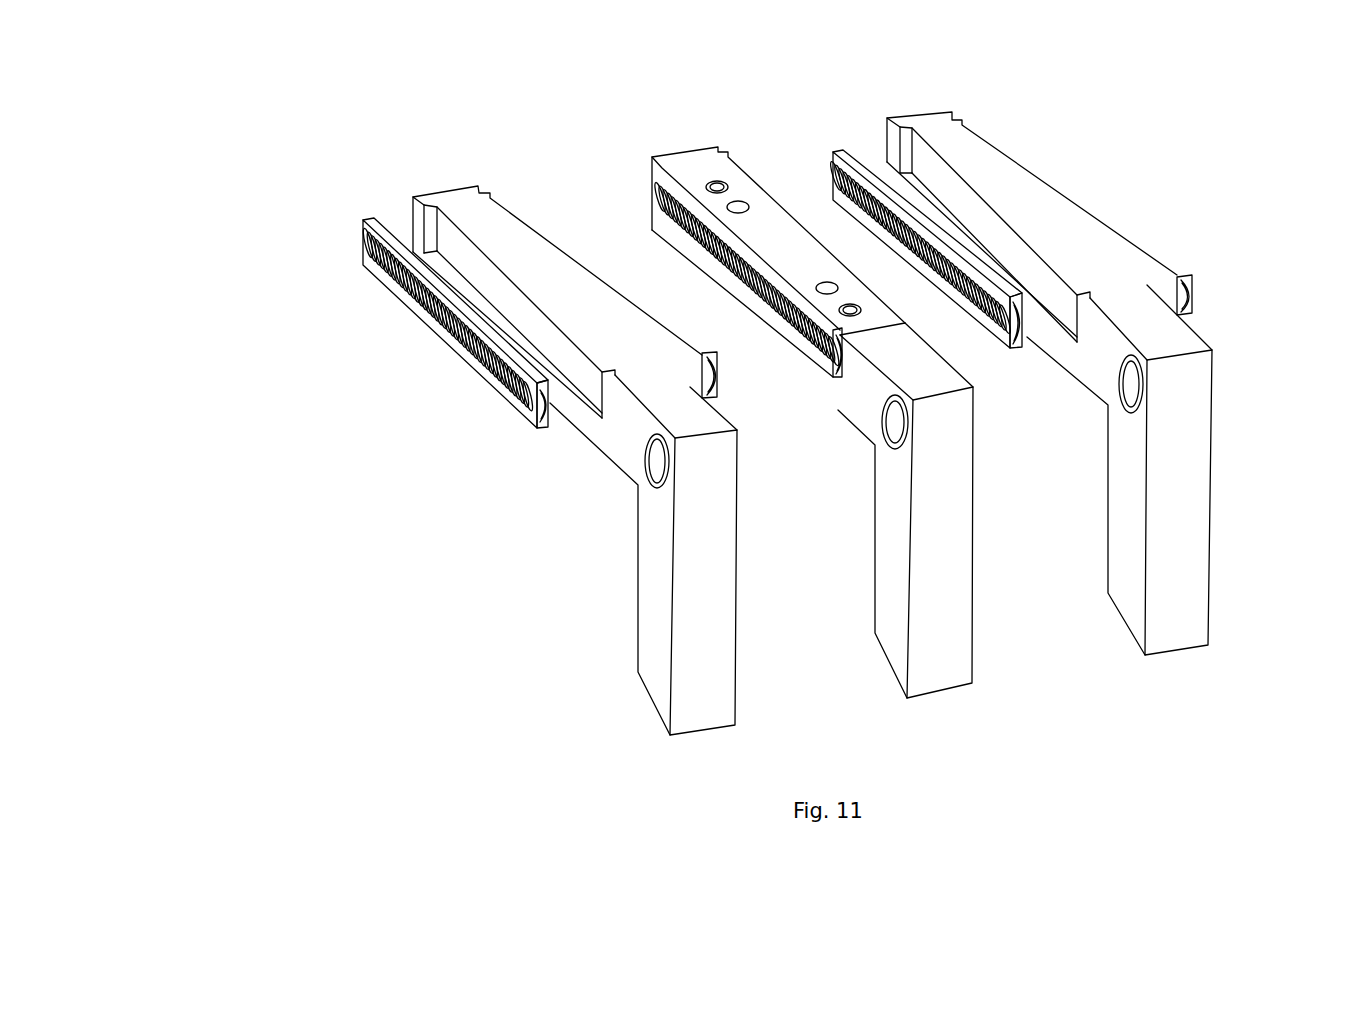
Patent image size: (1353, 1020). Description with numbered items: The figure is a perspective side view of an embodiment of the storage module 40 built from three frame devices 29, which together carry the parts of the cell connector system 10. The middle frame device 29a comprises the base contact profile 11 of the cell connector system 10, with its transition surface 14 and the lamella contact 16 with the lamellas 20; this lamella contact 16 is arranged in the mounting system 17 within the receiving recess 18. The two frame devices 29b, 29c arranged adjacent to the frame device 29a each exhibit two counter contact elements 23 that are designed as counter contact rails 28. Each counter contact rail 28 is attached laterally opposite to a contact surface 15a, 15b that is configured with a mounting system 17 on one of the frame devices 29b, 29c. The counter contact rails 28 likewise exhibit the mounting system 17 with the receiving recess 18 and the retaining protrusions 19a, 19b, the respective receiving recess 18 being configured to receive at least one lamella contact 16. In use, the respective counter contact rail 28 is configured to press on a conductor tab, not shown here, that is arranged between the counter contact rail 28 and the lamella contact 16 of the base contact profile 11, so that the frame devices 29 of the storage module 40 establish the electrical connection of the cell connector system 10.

The cell connector system 10 is at (356, 181).
The storage module 40 is at (702, 393).
The base contact profile 11 is at (635, 195).
The transition surface 14 is at (778, 262).
The contact surface 15a is at (539, 430).
The contact surface 15b is at (707, 393).
The lamella contact 16 is at (420, 325).
The mounting system 17 is at (637, 312).
The receiving recess 18 is at (637, 312).
The retaining protrusion 19a is at (362, 229).
The retaining protrusion 19b is at (600, 233).
The lamellas 20 is at (755, 362).
The counter contact element 23 is at (537, 227).
The counter contact rail 28 is at (722, 298).
The frame device 29 is at (881, 510).
The frame device 29a is at (905, 510).
The frame device 29b is at (643, 555).
The frame device 29c is at (1119, 470).